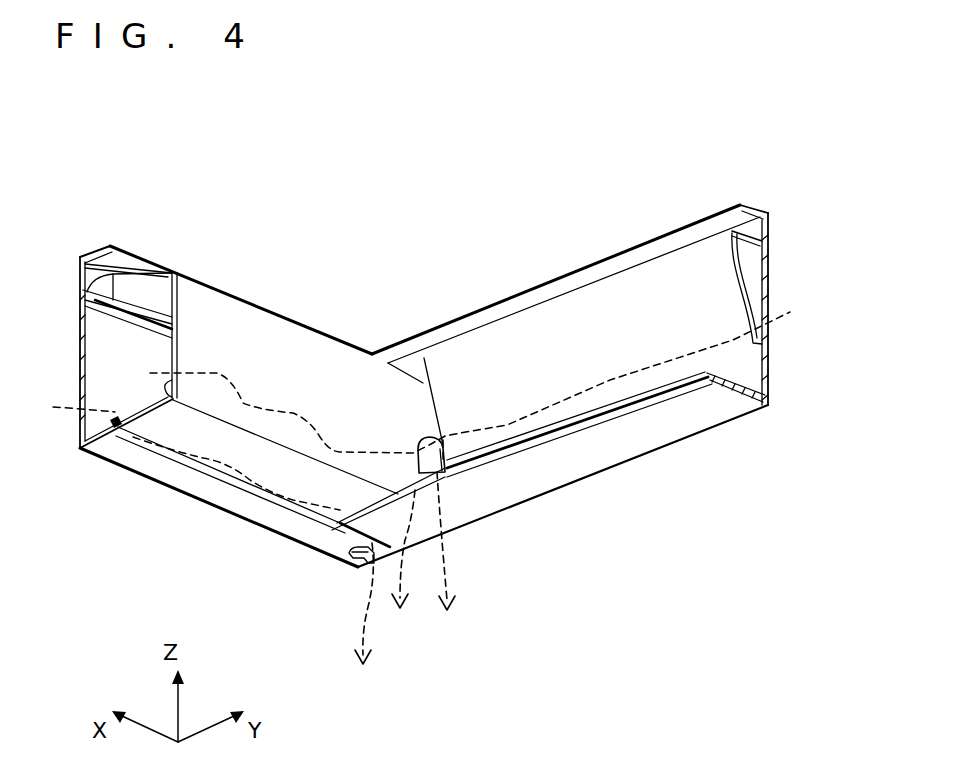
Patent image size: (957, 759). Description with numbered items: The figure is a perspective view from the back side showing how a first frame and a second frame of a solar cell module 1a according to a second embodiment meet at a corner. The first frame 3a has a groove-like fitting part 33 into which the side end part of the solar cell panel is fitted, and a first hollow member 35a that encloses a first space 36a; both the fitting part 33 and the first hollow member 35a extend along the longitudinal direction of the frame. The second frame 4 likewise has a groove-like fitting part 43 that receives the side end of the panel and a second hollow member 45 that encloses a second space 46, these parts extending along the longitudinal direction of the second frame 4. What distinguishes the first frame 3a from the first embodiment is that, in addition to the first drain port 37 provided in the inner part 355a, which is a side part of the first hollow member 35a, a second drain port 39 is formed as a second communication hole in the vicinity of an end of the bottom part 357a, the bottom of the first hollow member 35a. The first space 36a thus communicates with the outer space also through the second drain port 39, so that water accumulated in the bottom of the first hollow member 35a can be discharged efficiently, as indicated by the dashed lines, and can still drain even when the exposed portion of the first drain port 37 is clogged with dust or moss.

The solar cell module 1a is at (130, 205).
The first frame 3a is at (195, 500).
The second frame 4 is at (643, 456).
The fitting part 33 is at (70, 273).
The first hollow member 35a is at (72, 348).
The first space 36a is at (90, 373).
The first drain port 37 is at (449, 470).
The second drain port 39 is at (352, 563).
The fitting part 43 is at (782, 228).
The second hollow member 45 is at (790, 298).
The second space 46 is at (768, 274).
The inner part 355a is at (255, 318).
The bottom part 357a is at (80, 450).